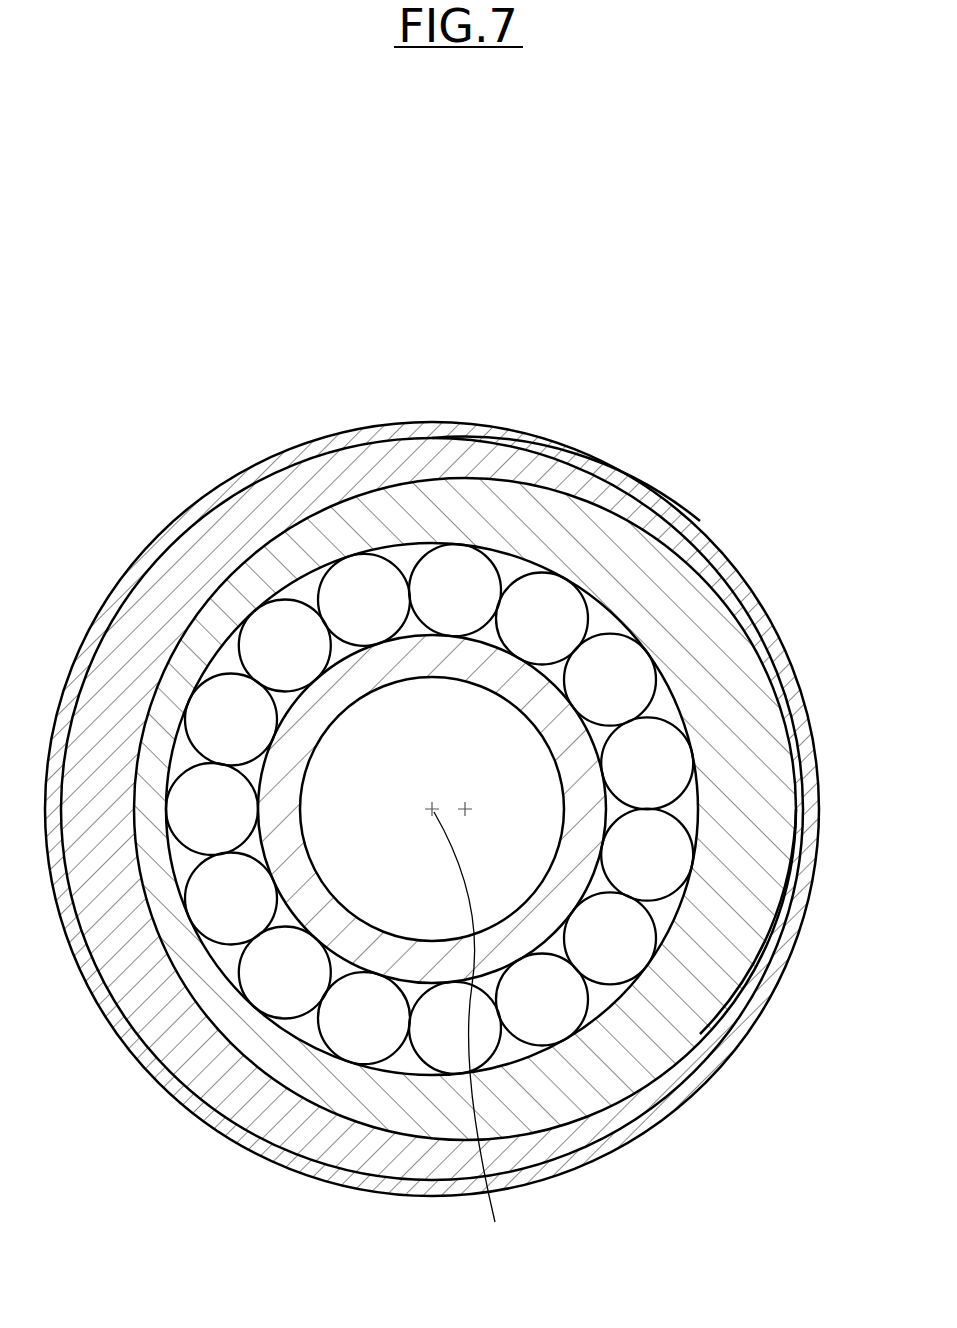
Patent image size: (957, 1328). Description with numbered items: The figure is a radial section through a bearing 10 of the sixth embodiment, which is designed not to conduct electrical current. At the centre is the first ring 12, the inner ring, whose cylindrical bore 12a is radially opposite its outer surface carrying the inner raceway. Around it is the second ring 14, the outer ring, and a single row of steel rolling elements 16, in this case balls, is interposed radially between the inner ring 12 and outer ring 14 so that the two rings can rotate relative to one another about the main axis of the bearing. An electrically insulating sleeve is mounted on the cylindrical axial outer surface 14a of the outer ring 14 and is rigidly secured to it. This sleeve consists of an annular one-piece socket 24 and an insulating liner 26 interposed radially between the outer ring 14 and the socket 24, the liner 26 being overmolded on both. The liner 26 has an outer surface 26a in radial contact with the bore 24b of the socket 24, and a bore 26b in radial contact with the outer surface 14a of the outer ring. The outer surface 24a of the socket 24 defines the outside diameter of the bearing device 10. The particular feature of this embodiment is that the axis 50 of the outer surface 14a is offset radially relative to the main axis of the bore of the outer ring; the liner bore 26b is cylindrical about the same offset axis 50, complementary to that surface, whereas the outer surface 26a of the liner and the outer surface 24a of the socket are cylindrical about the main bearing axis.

The bearing 10 is at (714, 411).
The first ring 12 is at (429, 942).
The cylindrical bore 12a is at (413, 898).
The second ring 14 is at (465, 843).
The cylindrical axial outer surface 14a is at (731, 1008).
The rolling elements 16 is at (223, 823).
The socket 24 is at (432, 772).
The cylindrical axial outer surface 24a is at (627, 474).
The cylindrical bore 24b is at (437, 457).
The insulating liner 26 is at (463, 809).
The cylindrical axial outer surface 26a is at (737, 588).
The cylindrical bore 26b is at (732, 648).
The axis 50 is at (467, 812).